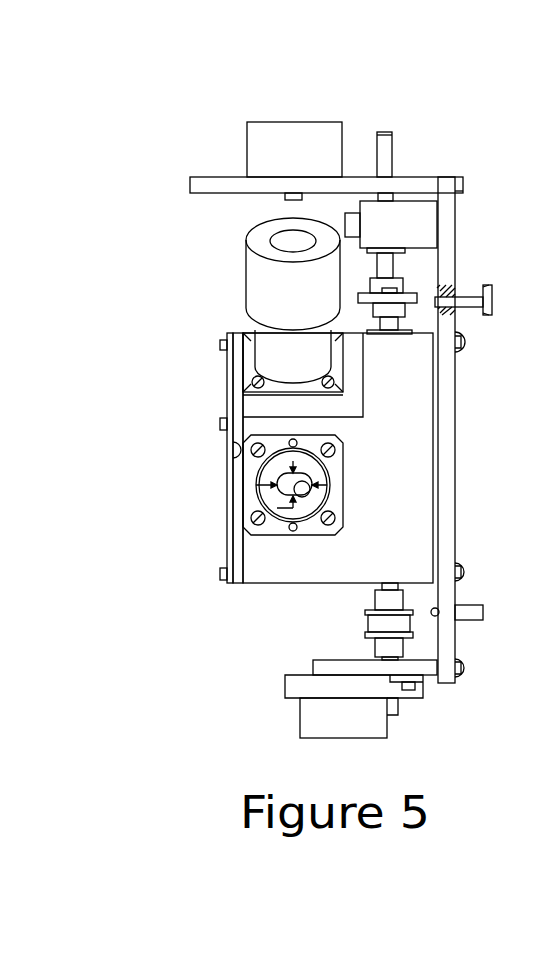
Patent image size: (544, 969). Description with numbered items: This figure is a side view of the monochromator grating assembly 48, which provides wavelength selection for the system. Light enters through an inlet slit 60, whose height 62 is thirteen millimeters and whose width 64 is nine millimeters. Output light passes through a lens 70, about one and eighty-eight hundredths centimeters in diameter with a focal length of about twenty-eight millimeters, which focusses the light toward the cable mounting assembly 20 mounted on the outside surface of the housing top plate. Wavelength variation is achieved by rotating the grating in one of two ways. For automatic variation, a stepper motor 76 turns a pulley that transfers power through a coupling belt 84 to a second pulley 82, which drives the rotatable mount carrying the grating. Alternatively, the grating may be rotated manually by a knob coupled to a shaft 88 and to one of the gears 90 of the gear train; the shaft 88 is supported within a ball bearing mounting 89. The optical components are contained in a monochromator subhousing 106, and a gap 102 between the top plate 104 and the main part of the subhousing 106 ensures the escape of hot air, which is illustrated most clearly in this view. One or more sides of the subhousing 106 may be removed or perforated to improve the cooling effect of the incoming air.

The cable mounting assembly 20 is at (292, 122).
The monochromator grating assembly 48 is at (390, 107).
The shaft 88 is at (393, 145).
The ball bearing mounting 89 is at (418, 250).
The gear 90 is at (358, 297).
The lens 70 is at (293, 241).
The top plate 104 is at (227, 402).
The gap 102 is at (227, 441).
The width 64 is at (252, 484).
The height 62 is at (250, 508).
The inlet slit 60 is at (302, 495).
The monochromator subhousing 106 is at (298, 572).
The second pulley 82 is at (368, 606).
The coupling belt 84 is at (380, 622).
The stepper motor 76 is at (325, 728).